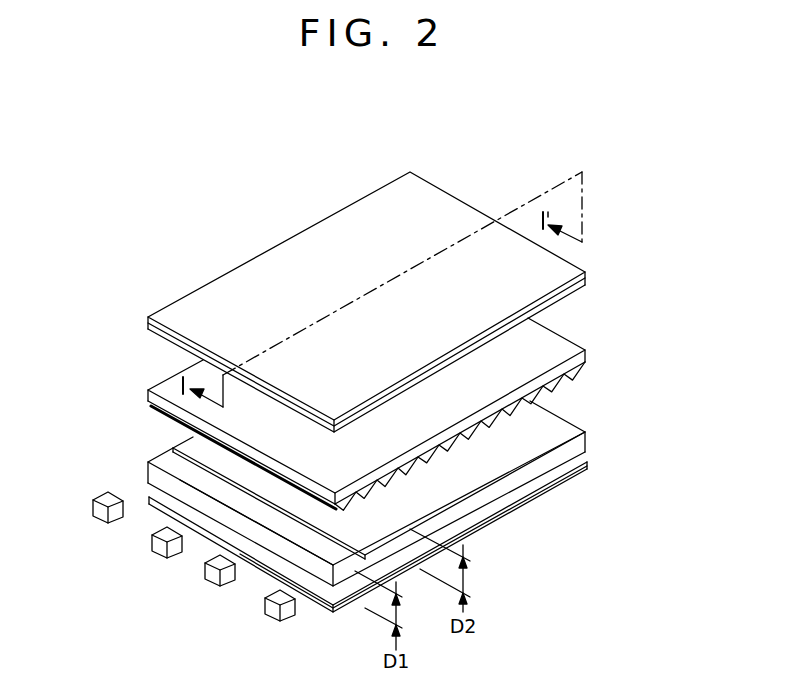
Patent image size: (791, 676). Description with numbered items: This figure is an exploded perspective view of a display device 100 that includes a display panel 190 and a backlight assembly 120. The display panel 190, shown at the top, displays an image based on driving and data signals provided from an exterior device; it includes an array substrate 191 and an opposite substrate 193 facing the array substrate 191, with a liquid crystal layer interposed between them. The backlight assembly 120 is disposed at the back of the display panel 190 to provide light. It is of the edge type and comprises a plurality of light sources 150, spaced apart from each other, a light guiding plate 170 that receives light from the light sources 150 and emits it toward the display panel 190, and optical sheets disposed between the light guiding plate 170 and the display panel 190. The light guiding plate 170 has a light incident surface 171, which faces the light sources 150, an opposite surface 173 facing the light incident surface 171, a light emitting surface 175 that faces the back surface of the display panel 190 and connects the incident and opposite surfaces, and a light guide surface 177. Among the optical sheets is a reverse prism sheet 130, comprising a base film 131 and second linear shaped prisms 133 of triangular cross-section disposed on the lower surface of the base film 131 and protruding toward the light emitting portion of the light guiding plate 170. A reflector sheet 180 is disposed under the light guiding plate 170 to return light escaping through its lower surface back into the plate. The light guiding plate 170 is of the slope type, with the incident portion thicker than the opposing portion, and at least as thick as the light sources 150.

The display device 100 is at (386, 109).
The backlight assembly 120 is at (68, 322).
The reverse prism sheet 130 is at (662, 337).
The base film 131 is at (587, 352).
The second linear shaped prisms 133 is at (587, 372).
The light sources 150 is at (160, 548).
The light guiding plate 170 is at (662, 398).
The light incident surface 171 is at (280, 548).
The opposite surface 173 is at (588, 436).
The light emitting surface 175 is at (553, 427).
The light guide surface 177 is at (588, 464).
The reflector sheet 180 is at (527, 505).
The display panel 190 is at (252, 180).
The array substrate 191 is at (232, 270).
The opposite substrate 193 is at (302, 257).